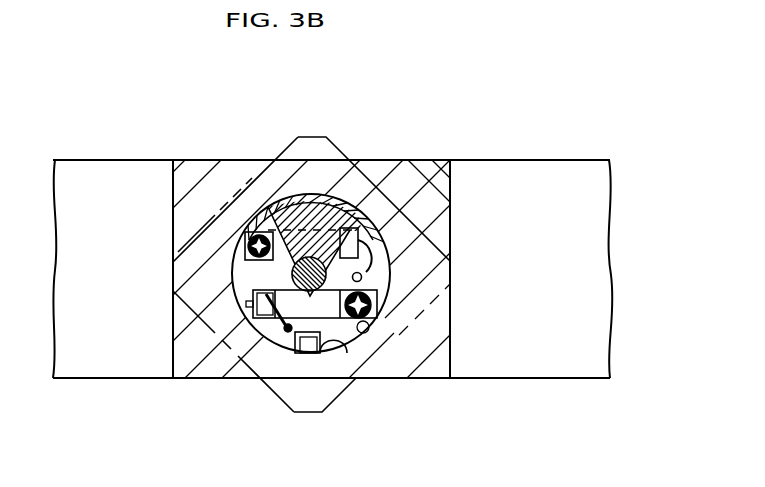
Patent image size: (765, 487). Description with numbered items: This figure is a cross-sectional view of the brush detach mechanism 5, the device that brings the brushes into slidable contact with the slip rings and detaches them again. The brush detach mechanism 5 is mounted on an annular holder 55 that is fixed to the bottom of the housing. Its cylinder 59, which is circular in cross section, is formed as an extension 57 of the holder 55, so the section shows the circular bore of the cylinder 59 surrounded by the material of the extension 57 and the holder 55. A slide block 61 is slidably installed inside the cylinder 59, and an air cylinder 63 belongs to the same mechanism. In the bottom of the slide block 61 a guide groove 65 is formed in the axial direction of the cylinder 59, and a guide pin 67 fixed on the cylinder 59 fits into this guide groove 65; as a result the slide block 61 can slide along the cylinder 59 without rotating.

The brush detach mechanism 5 is at (337, 132).
The annular holder 55 is at (573, 183).
The extension 57 is at (412, 172).
The cylinder 59 is at (367, 328).
The slide block 61 is at (243, 276).
The air cylinder 63 is at (298, 258).
The guide groove 65 is at (303, 355).
The guide pin 67 is at (343, 340).